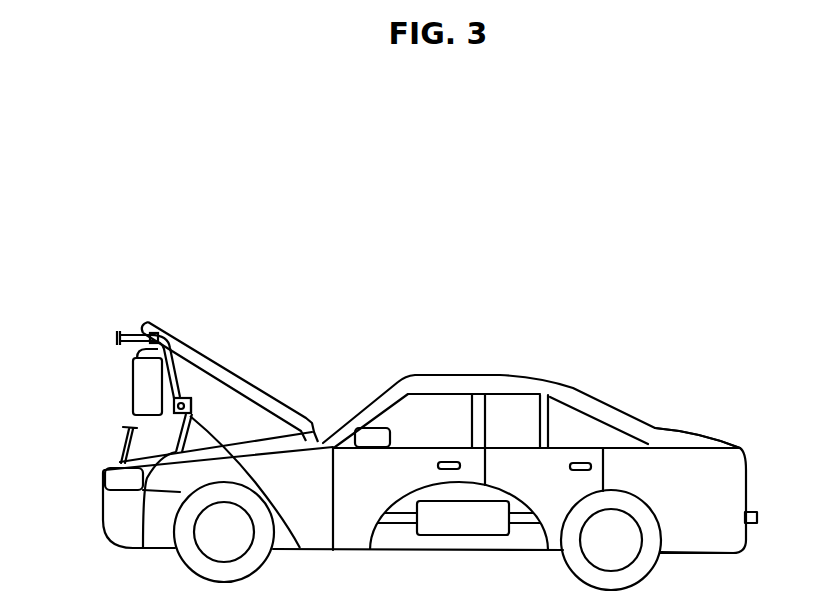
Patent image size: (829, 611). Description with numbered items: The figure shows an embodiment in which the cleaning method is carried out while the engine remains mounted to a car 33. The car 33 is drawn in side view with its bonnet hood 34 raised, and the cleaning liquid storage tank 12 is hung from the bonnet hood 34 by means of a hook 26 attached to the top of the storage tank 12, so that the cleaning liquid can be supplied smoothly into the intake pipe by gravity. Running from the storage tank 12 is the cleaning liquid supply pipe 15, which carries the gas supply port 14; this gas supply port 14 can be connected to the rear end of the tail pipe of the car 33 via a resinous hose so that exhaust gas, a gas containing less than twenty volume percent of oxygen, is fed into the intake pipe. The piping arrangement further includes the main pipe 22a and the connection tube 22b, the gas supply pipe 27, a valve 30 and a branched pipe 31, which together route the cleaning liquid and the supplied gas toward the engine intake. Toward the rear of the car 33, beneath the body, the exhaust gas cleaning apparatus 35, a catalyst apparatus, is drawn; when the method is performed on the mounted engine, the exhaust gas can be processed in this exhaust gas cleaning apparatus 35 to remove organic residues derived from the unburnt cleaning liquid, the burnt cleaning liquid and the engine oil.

The cleaning liquid storage tank 12 is at (143, 390).
The gas supply port 14 is at (204, 412).
The cleaning liquid supply pipe 15 is at (184, 393).
The main pipe 22a is at (175, 342).
The connection tube 22b is at (143, 547).
The hook 26 is at (128, 335).
The gas supply pipe 27 is at (124, 334).
The valve 30 is at (197, 405).
The branched pipe 31 is at (300, 548).
The car 33 is at (604, 384).
The bonnet hood 34 is at (163, 322).
The exhaust gas cleaning apparatus 35 is at (462, 527).